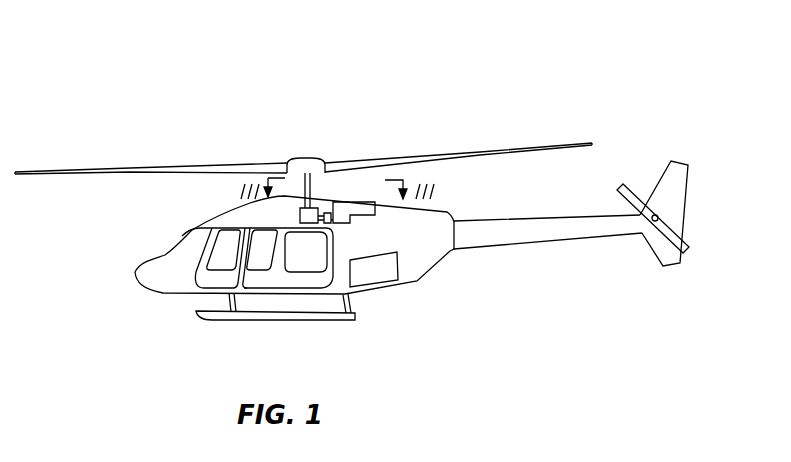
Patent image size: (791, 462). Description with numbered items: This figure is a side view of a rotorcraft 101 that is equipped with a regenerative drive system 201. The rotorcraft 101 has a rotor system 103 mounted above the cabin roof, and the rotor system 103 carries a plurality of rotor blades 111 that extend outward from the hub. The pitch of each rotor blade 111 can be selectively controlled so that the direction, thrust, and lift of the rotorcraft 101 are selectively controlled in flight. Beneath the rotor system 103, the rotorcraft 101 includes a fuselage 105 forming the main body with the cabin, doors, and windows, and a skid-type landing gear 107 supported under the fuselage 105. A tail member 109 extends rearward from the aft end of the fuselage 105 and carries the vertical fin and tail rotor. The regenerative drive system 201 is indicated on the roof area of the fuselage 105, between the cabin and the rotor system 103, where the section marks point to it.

The rotorcraft 101 is at (143, 126).
The rotor system 103 is at (327, 139).
The fuselage 105 is at (183, 295).
The landing gear 107 is at (313, 319).
The tail member 109 is at (525, 240).
The rotor blade 111 is at (538, 148).
The regenerative drive system 201 is at (288, 217).